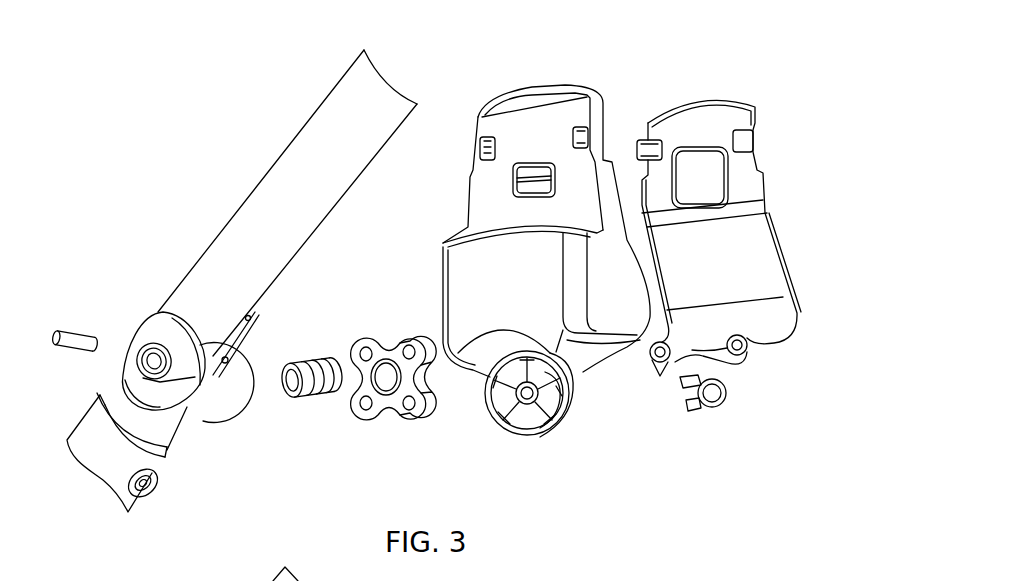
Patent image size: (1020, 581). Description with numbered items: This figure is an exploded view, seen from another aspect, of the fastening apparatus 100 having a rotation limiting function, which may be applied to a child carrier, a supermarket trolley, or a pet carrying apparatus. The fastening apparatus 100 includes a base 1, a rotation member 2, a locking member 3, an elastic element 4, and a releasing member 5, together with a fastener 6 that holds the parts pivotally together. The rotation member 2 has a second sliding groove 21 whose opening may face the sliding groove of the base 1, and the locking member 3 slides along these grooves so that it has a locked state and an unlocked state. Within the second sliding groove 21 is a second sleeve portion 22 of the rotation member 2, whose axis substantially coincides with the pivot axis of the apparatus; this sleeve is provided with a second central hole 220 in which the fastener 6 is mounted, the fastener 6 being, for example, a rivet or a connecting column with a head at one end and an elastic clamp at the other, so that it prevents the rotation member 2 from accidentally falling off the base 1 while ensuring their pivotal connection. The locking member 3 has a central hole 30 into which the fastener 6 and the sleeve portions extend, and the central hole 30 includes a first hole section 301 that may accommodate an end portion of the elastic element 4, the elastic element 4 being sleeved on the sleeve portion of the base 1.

The fastening apparatus 100 is at (493, 33).
The base 1 is at (150, 327).
The rotation member 2 is at (550, 113).
The second sliding groove 21 is at (512, 417).
The second sleeve portion 22 is at (558, 420).
The second central hole 220 is at (540, 433).
The locking member 3 is at (402, 412).
The central hole 30 is at (383, 403).
The first hole section 301 is at (378, 363).
The elastic element 4 is at (308, 400).
The releasing member 5 is at (722, 407).
The fastener 6 is at (78, 338).